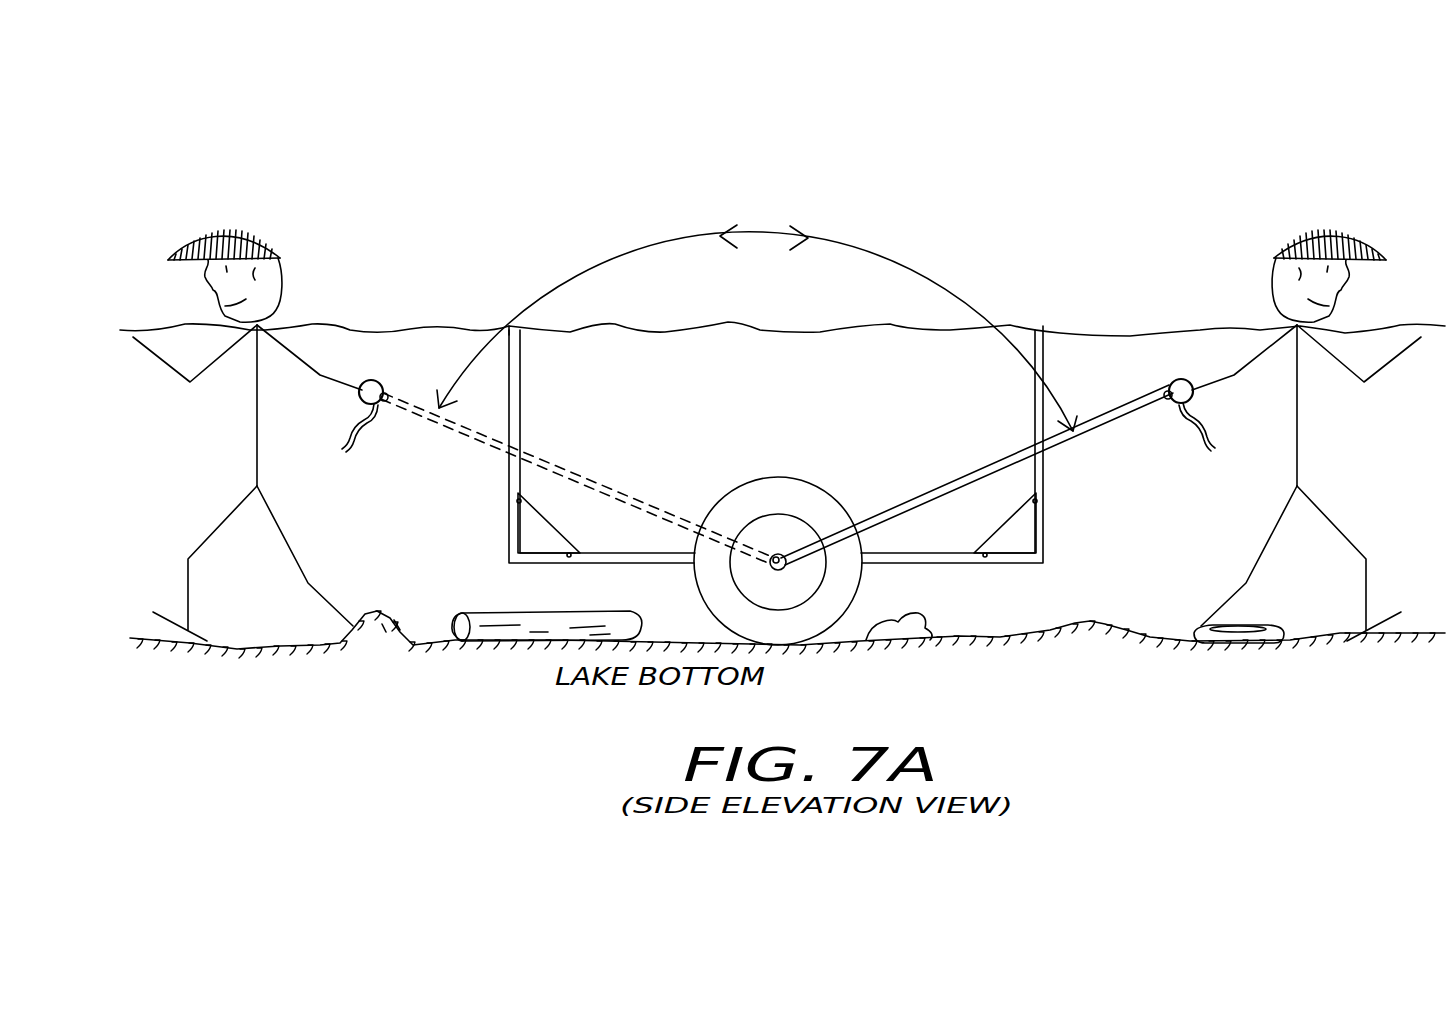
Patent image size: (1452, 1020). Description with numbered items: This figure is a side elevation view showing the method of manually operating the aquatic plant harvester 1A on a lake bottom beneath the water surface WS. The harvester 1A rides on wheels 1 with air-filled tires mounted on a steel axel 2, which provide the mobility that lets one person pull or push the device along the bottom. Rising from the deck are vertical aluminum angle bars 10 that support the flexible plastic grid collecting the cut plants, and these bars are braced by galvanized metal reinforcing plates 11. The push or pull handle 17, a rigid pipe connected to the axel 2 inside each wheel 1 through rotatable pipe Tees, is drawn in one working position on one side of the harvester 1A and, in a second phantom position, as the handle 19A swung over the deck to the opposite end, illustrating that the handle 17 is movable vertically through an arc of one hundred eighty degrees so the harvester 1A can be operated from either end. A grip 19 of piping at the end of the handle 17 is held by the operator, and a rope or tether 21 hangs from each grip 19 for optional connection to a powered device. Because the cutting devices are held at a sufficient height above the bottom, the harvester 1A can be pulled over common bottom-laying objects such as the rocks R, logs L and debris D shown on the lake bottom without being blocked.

The wheels 1 is at (745, 503).
The harvester 1A is at (883, 436).
The axel 2 is at (740, 578).
The vertical aluminum angle bars 10 is at (1040, 357).
The reinforcing plates 11 is at (533, 529).
The handle 17 is at (1100, 420).
The handle grip 19 is at (382, 404).
The ring 19A is at (371, 379).
The tether rope 21 is at (345, 434).
The logs L is at (530, 637).
The rocks R is at (920, 634).
The debris D is at (1243, 645).
The water surface WS is at (1133, 338).